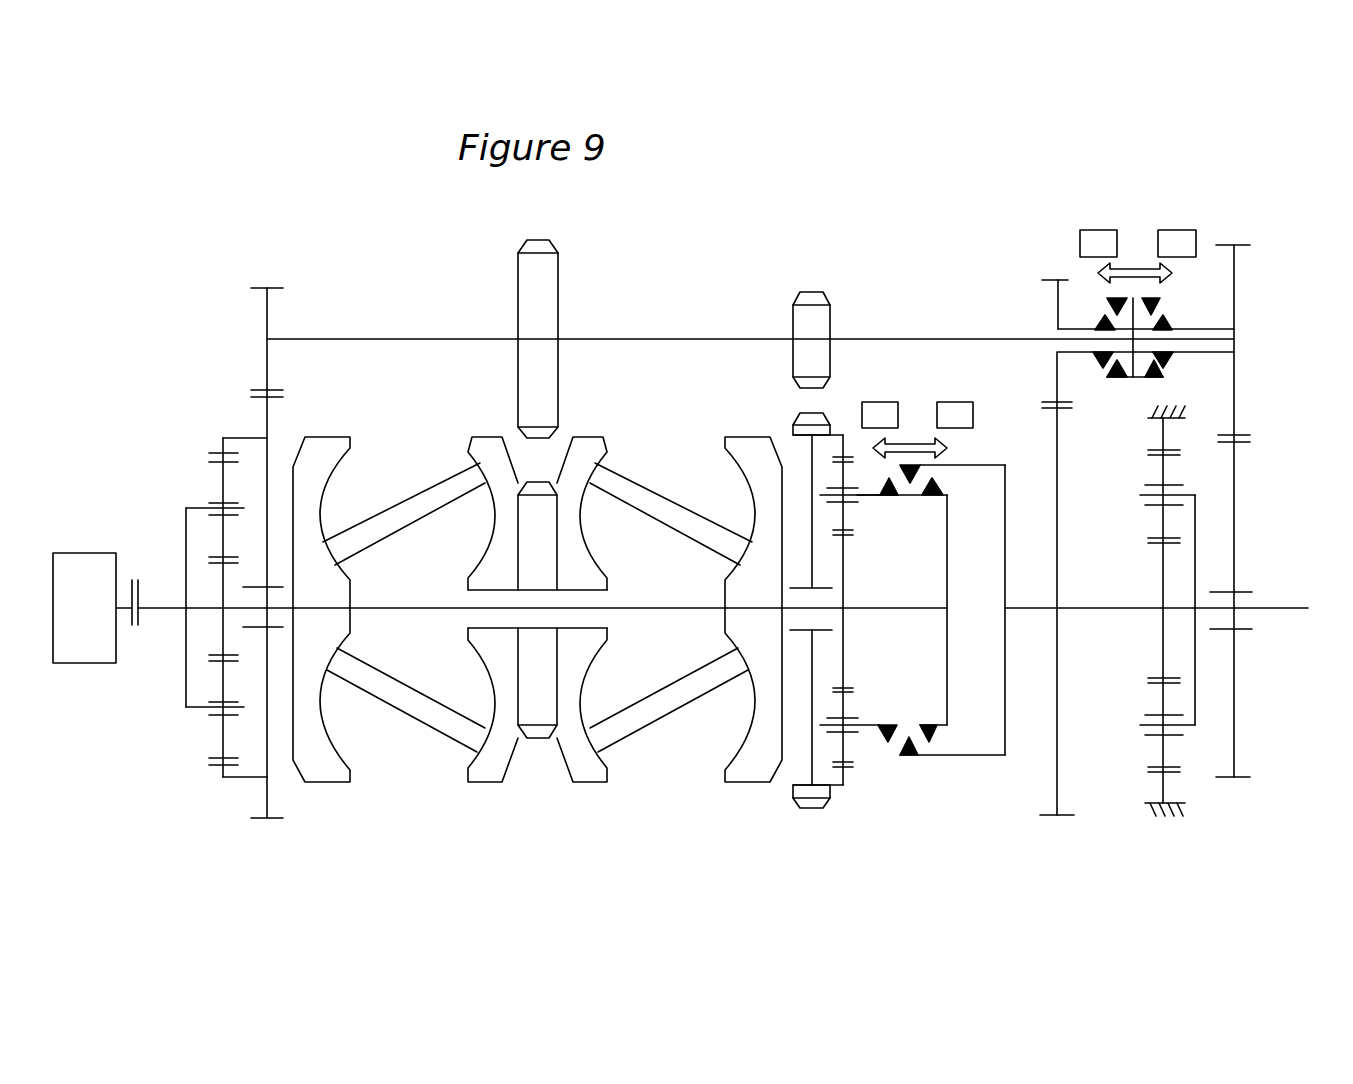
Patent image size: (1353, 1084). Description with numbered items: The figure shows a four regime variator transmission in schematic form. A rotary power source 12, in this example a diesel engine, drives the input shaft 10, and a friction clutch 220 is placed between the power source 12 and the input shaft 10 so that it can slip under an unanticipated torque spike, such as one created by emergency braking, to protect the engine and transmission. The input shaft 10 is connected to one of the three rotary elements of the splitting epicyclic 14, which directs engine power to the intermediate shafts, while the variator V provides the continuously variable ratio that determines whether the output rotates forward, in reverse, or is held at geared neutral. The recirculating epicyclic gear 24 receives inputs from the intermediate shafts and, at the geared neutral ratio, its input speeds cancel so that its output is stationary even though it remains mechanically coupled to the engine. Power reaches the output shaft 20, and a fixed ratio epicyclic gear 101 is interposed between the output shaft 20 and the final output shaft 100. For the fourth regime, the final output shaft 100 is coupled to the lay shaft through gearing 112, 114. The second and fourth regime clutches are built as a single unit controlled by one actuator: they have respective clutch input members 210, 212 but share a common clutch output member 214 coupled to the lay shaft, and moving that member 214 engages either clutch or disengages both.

The rotary power source 12 is at (91, 625).
The input shaft 10 is at (163, 608).
The friction clutch 220 is at (145, 580).
The splitting epicyclic 14 is at (184, 783).
The variator V is at (513, 801).
The recirculating epicyclic gear 24 is at (860, 782).
The output shaft 20 is at (1078, 608).
The final output shaft 100 is at (1270, 608).
The fixed ratio epicyclic gear 101 is at (1140, 628).
The clutch input member 210 is at (1105, 319).
The clutch input member 212 is at (1158, 323).
The common clutch output member 214 is at (1113, 380).
The gearing 112 is at (1234, 390).
The gearing 114 is at (1234, 508).